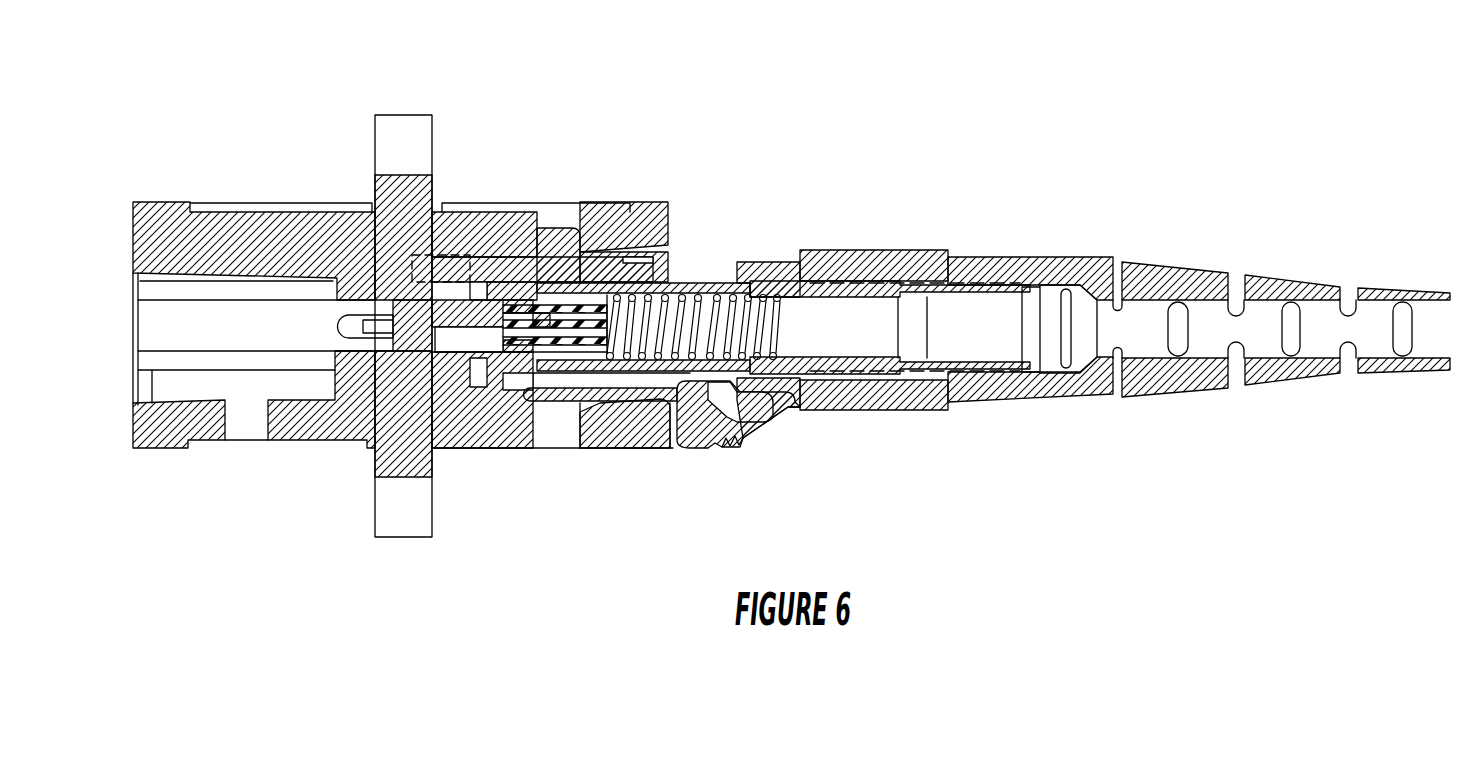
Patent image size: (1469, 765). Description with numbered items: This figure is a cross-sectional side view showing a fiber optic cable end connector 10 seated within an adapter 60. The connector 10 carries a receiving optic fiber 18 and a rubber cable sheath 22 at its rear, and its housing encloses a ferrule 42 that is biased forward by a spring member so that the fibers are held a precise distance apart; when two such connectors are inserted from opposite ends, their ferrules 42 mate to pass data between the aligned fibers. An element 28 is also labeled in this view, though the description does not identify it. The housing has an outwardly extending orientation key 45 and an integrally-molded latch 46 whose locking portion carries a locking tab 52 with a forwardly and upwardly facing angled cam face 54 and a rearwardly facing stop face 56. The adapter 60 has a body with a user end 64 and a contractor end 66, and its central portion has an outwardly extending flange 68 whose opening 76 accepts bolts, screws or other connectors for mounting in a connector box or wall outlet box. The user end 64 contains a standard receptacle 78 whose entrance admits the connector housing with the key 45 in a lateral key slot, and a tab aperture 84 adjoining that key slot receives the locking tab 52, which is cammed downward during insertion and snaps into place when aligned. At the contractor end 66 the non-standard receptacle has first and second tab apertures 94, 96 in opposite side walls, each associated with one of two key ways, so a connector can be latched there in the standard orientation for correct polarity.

The fiber optic cable end connector 10 is at (931, 233).
The receiving optic fiber 18 is at (380, 331).
The rubber cable sheath 22 is at (968, 411).
The contact 28 is at (479, 367).
The ferrule 42 is at (407, 339).
The orientation key 45 is at (495, 390).
The latch 46 is at (691, 454).
The locking tab 52 is at (573, 404).
The angled cam face 54 is at (553, 402).
The stop face 56 is at (585, 407).
The adapter 60 is at (295, 166).
The user end 64 is at (124, 237).
The contractor end 66 is at (692, 219).
The flange 68 is at (395, 113).
The opening 76 is at (425, 135).
The standard receptacle 78 is at (145, 328).
The tab aperture 84 is at (228, 425).
The first tab aperture 94 is at (537, 398).
The second tab aperture 96 is at (570, 222).